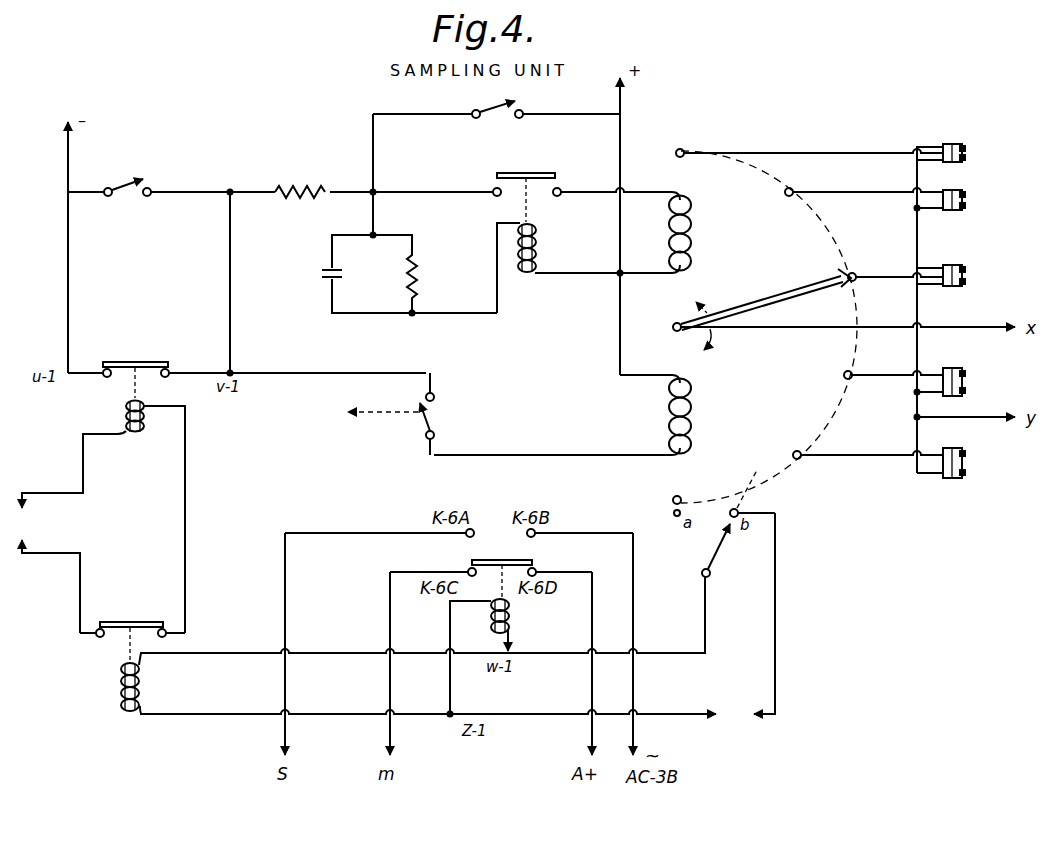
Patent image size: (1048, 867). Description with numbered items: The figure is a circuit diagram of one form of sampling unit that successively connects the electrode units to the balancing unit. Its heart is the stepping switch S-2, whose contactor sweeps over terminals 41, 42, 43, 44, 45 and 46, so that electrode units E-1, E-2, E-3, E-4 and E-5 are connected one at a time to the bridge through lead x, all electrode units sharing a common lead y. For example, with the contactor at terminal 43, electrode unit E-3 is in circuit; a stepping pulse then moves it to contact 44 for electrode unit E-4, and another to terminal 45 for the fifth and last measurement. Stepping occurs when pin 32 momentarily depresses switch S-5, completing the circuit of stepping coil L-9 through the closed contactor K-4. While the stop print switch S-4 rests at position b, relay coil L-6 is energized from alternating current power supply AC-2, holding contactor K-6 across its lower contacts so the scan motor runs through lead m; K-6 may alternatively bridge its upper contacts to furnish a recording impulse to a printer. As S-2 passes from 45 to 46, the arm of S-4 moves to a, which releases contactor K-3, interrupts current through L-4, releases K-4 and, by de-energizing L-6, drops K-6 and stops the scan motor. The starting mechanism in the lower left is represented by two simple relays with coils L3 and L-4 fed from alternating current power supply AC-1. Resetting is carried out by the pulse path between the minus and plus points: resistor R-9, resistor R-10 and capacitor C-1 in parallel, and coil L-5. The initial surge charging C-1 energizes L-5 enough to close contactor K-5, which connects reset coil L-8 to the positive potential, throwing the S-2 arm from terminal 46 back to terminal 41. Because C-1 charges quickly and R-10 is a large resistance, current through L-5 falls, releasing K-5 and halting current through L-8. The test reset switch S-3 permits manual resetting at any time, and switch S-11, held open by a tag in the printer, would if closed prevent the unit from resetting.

The terminal 41 is at (805, 162).
The terminal 42 is at (850, 198).
The terminal 43 is at (877, 267).
The contact 44 is at (877, 367).
The terminal 45 is at (855, 446).
The terminal 46 is at (675, 488).
The pin 32 is at (368, 414).
The stepping switch S-2 is at (762, 309).
The test reset switch S-3 is at (171, 200).
The stop print switch S-4 is at (738, 523).
The switch S-5 is at (447, 414).
The switch S-11 is at (496, 101).
The contactor K-3 is at (132, 626).
The contactor K-4 is at (247, 365).
The contactor K-5 is at (527, 186).
The contactor K-6 is at (459, 563).
The relay coil L3 is at (110, 683).
The coil L-4 is at (103, 517).
The coil L-5 is at (558, 268).
The relay coil L-6 is at (496, 656).
The reset coil L-8 is at (670, 235).
The stepping coil L-9 is at (577, 415).
The resistor R-9 is at (300, 181).
The resistor R-10 is at (419, 274).
The capacitor C-1 is at (391, 274).
The electrode unit E-1 is at (956, 154).
The electrode unit E-2 is at (955, 201).
The electrode unit E-3 is at (956, 276).
The electrode unit E-4 is at (955, 382).
The electrode unit E-5 is at (956, 463).
The alternating current power supply AC-1 is at (47, 563).
The alternating current power supply AC-2 is at (747, 628).